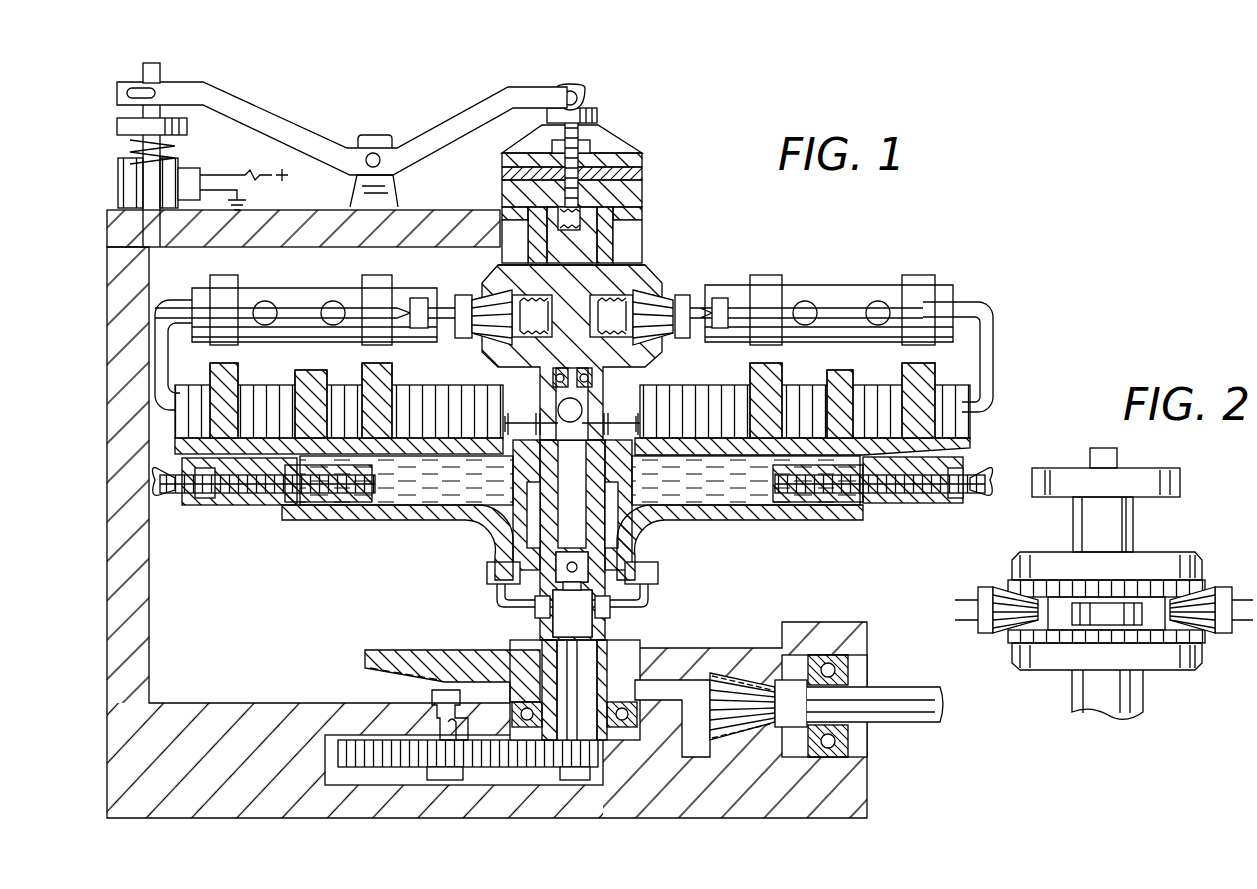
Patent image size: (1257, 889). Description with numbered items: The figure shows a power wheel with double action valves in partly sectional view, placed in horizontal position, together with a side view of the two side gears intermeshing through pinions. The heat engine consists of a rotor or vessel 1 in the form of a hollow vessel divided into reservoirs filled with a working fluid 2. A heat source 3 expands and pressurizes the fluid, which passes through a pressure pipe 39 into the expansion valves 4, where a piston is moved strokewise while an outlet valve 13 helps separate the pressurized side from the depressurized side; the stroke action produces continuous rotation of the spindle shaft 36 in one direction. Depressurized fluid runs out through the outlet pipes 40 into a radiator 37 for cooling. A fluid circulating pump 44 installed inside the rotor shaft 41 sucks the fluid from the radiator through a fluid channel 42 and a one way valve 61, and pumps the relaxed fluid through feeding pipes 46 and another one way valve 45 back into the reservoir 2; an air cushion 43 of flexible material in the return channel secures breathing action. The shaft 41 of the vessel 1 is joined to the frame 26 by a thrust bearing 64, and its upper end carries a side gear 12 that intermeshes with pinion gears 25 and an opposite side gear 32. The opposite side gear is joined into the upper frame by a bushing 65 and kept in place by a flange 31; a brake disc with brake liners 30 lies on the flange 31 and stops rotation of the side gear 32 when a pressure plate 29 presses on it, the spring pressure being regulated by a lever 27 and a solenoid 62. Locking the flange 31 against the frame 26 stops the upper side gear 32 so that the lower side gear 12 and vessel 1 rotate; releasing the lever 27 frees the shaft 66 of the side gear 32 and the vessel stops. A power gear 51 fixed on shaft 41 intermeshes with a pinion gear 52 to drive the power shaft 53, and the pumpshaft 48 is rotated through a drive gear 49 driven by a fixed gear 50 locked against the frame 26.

In FIG. 1, the rotor (vessel) 1 is at (290, 510).
In FIG. 1, the working fluid (reservoir) 2 is at (395, 500).
In FIG. 1, the heat source 3 is at (335, 502).
In FIG. 1, the expansion valve 4 is at (292, 300).
In FIG. 1, the side gear 12 is at (650, 352).
In FIG. 2, the side gear 12 is at (1175, 655).
In FIG. 1, the outlet valve 13 is at (872, 300).
In FIG. 1, the pinion gear 25 is at (662, 305).
In FIG. 2, the pinion gear 25 is at (1222, 587).
In FIG. 1, the frame 26 is at (148, 310).
In FIG. 1, the lever (brake lever) 27 is at (240, 118).
In FIG. 1, the pressure plate 29 is at (628, 152).
In FIG. 1, the brake disc with brake liners 30 is at (642, 174).
In FIG. 1, the flange 31 is at (642, 196).
In FIG. 2, the flange 31 is at (1165, 477).
In FIG. 1, the opposite side gear (upper side gear) 32 is at (650, 285).
In FIG. 2, the opposite side gear (upper side gear) 32 is at (1160, 570).
In FIG. 1, the spindle shaft 36 is at (720, 298).
In FIG. 1, the radiator 37 is at (955, 418).
In FIG. 1, the pressure pipe 39 is at (308, 394).
In FIG. 1, the outlet pipe 40 is at (993, 360).
In FIG. 1, the rotor shaft 41 is at (582, 412).
In FIG. 2, the rotor shaft 41 is at (1143, 708).
In FIG. 1, the fluid channel (hollow shaft) 42 is at (570, 468).
In FIG. 1, the air cushion 43 is at (552, 413).
In FIG. 1, the fluid circulating pump 44 is at (556, 625).
In FIG. 1, the one way valve 45 is at (487, 572).
In FIG. 1, the feeding pipe 46 is at (497, 602).
In FIG. 1, the pumpshaft 48 is at (600, 690).
In FIG. 1, the drive gear 49 is at (590, 757).
In FIG. 1, the fixed gear 50 is at (395, 748).
In FIG. 1, the power gear 51 is at (412, 672).
In FIG. 1, the pinion gear 52 is at (738, 673).
In FIG. 1, the power shaft 53 is at (905, 695).
In FIG. 1, the one way valve 61 is at (556, 566).
In FIG. 1, the solenoid 62 is at (168, 163).
In FIG. 1, the thrust bearing 64 is at (700, 688).
In FIG. 1, the bushing 65 is at (500, 216).
In FIG. 1, the shaft of side gear 66 is at (563, 247).